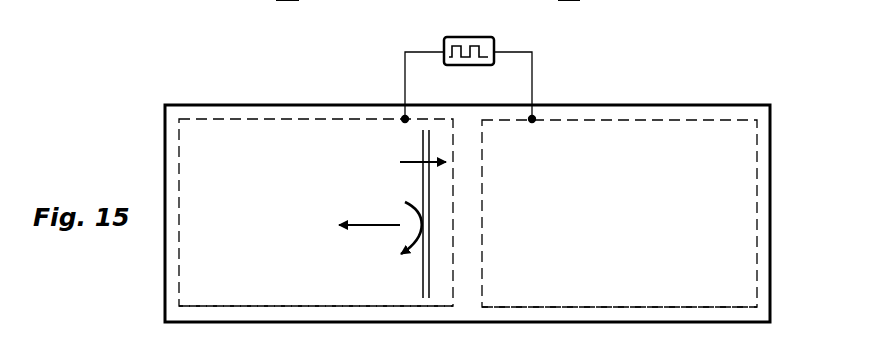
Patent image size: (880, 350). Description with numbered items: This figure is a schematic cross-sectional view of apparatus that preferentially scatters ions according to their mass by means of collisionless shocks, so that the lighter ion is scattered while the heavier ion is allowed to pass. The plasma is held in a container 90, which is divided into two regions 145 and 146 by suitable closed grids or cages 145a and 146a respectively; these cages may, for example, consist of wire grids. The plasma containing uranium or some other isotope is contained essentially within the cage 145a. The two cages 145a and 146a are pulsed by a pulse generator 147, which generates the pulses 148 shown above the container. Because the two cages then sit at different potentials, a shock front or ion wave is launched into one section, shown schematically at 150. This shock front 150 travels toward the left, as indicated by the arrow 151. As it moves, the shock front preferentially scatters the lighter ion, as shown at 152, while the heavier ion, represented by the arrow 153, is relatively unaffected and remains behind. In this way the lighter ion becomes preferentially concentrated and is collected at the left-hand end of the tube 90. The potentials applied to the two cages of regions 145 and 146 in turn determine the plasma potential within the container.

The container 90 is at (240, 105).
The first region 145 is at (296, 203).
The first cage 145a is at (265, 306).
The second region 146 is at (629, 205).
The second cage 146a is at (616, 307).
The pulse generator 147 is at (444, 43).
The pulses 148 is at (470, 37).
The shock front 150 is at (423, 181).
The arrow 151 is at (360, 224).
The lighter ion scattering 152 is at (407, 259).
The heavier ion arrow 153 is at (410, 160).